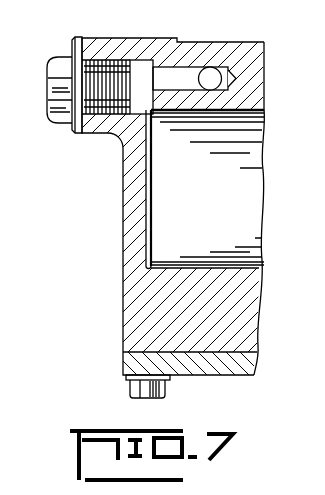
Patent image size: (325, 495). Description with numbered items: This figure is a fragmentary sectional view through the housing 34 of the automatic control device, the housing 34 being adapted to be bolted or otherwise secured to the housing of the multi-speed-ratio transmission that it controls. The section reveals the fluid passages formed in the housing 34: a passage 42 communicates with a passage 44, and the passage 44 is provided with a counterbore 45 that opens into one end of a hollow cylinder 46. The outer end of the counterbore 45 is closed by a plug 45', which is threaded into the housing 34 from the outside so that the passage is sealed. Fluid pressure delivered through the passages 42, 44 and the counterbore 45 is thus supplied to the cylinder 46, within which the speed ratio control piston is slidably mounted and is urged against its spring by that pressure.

The housing 34 is at (130, 317).
The passage 42 is at (208, 84).
The passage 44 is at (183, 71).
The counterbore 45 is at (128, 72).
The plug 45' is at (46, 100).
The hollow cylinder 46 is at (256, 153).